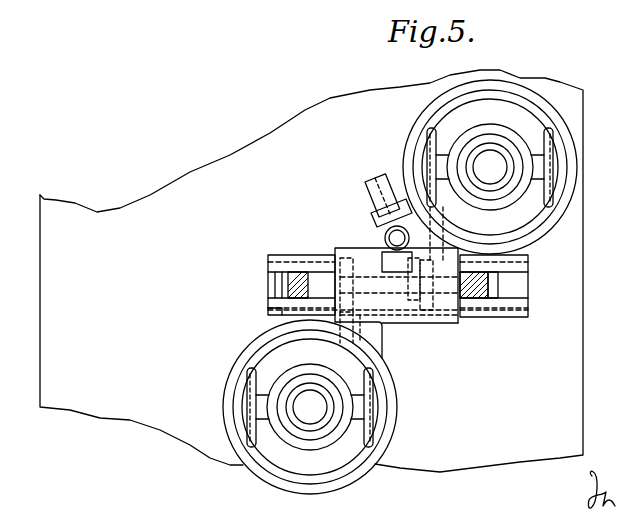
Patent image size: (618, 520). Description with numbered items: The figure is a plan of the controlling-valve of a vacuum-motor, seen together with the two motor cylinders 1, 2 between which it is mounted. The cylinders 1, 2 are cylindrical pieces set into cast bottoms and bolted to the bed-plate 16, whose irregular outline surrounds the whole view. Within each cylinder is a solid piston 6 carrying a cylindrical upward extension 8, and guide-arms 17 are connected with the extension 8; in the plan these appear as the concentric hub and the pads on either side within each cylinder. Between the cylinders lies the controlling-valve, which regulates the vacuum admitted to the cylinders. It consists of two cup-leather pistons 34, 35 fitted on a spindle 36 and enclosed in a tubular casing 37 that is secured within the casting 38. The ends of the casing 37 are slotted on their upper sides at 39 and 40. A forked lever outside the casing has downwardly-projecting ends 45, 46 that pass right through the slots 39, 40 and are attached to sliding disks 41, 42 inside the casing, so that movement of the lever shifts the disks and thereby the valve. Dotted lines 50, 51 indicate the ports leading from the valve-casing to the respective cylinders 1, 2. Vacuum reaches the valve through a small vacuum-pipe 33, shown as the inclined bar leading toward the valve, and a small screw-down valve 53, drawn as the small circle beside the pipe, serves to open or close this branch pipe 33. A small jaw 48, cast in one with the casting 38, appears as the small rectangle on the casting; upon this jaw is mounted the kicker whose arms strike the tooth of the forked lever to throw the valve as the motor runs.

The cylinder 1 is at (355, 473).
The cylinder 2 is at (570, 182).
The solid piston 6 is at (523, 207).
The cylindrical upward extension 8 is at (400, 287).
The bed-plate 16 is at (311, 271).
The guide-arms 17 is at (423, 152).
The small vacuum-pipe 33 is at (375, 187).
The cup-leather piston 34 is at (355, 300).
The cup-leather piston 35 is at (430, 267).
The spindle 36 is at (313, 280).
The tubular casing 37 is at (280, 267).
The casting 38 is at (438, 317).
The slot 39 is at (273, 275).
The slot 40 is at (513, 275).
The sliding disk 41 is at (285, 287).
The sliding disk 42 is at (493, 290).
The downwardly-projecting end 45 is at (270, 307).
The downwardly-projecting end 46 is at (477, 292).
The small jaw 48 is at (400, 272).
The port 50 is at (333, 345).
The port 51 is at (430, 247).
The small screw-down valve 53 is at (397, 238).